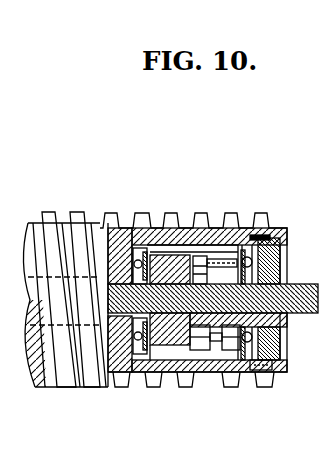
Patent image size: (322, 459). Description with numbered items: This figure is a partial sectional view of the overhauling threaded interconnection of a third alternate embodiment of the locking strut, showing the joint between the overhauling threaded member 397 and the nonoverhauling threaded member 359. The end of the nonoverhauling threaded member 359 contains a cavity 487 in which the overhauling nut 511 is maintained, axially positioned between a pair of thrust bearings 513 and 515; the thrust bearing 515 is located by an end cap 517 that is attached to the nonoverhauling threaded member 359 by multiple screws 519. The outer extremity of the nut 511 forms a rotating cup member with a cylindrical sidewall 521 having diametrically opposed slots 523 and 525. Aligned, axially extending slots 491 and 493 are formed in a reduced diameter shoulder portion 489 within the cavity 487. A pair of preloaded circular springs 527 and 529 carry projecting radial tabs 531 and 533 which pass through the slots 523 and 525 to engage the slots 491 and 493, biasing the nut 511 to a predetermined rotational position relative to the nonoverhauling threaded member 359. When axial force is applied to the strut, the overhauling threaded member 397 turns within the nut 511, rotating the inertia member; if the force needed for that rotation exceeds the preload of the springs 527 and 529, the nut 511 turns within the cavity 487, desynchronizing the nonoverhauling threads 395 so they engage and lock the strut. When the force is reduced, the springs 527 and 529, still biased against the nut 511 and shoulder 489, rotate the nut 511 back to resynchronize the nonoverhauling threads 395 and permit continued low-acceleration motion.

The nonoverhauling threaded member 359 is at (76, 384).
The nonoverhauling threads 395 is at (118, 384).
The overhauling threaded member 397 is at (284, 288).
The preloaded circular spring 527 is at (280, 315).
The thrust bearing 513 is at (130, 227).
The preloaded circular spring 529 is at (140, 252).
The slot 491 is at (152, 250).
The slot 523 is at (203, 255).
The overhauling nut 511 is at (192, 256).
The radial tab 531 is at (222, 259).
The thrust bearing 515 is at (248, 256).
The screws 519 is at (291, 236).
The cavity 487 is at (141, 354).
The slot 493 is at (188, 348).
The radial tab 533 is at (205, 350).
The slot 525 is at (228, 350).
The reduced diameter shoulder portion 489 is at (248, 346).
The cylindrical sidewall 521 is at (259, 362).
The end cap 517 is at (283, 342).